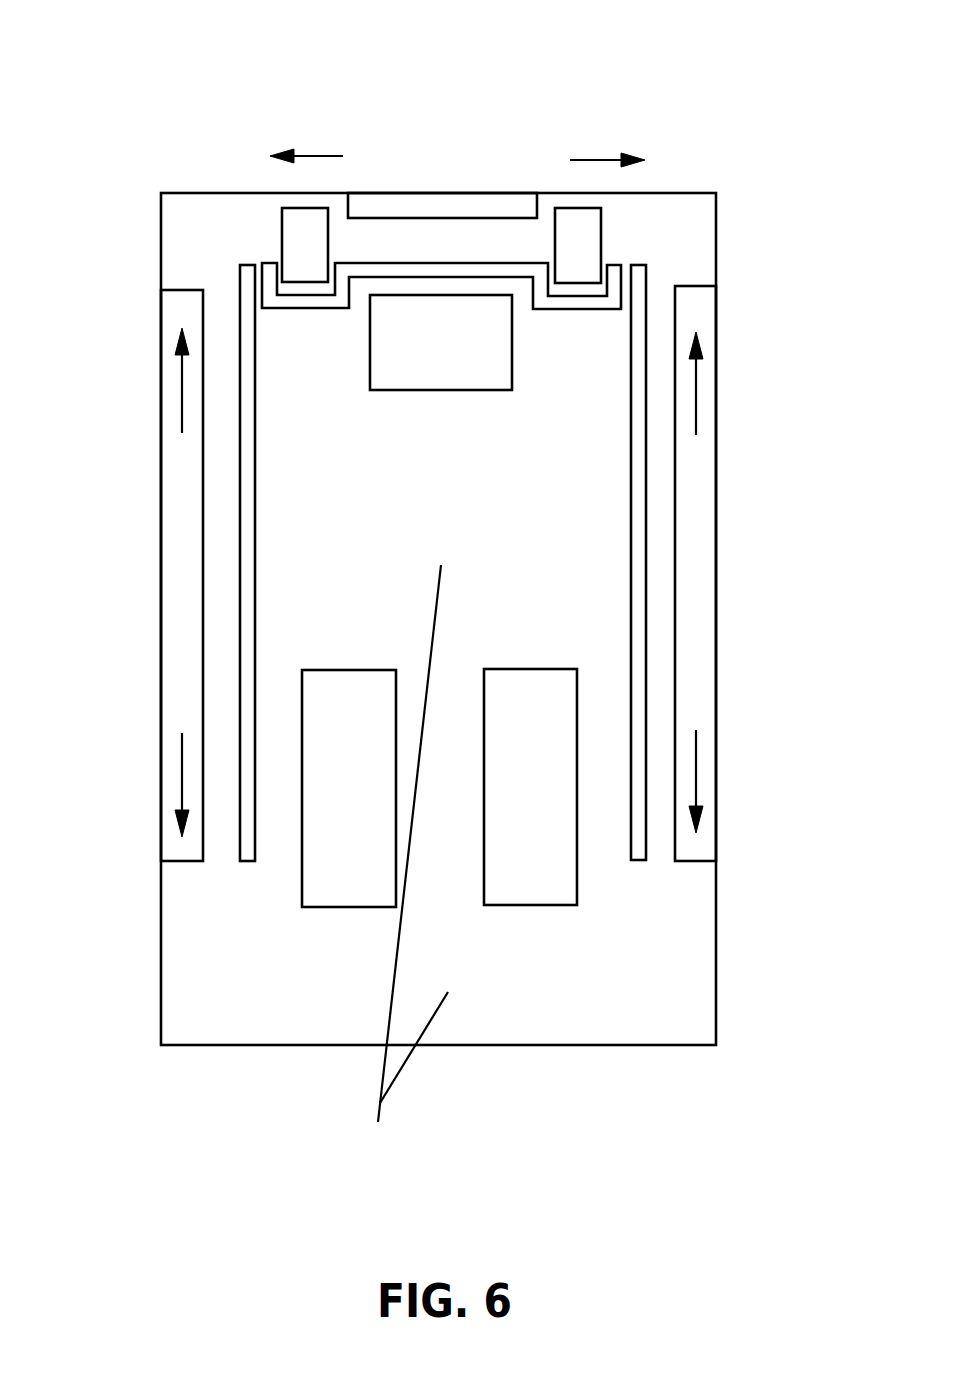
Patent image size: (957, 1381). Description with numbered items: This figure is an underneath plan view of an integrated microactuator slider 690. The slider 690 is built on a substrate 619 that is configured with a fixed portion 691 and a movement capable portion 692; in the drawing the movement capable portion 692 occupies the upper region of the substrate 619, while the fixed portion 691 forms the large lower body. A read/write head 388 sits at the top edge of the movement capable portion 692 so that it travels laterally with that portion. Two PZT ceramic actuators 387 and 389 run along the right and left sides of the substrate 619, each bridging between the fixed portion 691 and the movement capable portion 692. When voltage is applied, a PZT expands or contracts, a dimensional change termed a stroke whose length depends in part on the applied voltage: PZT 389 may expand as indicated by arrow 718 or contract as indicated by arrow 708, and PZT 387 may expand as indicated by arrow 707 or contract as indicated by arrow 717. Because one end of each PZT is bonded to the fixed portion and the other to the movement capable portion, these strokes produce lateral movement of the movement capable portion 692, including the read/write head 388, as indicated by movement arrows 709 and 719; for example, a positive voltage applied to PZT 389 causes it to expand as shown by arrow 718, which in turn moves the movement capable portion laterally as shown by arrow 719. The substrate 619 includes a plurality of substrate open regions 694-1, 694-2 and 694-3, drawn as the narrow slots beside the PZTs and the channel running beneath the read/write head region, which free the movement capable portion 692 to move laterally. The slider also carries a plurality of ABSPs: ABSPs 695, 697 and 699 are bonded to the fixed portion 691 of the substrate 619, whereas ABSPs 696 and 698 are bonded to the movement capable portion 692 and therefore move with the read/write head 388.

The integrated microactuator slider 690 is at (447, 583).
The substrate 619 is at (161, 222).
The fixed portion 691 is at (403, 859).
The movement capable portion 692 is at (220, 212).
The read/write head 388 is at (473, 208).
The ABSP 698 is at (305, 245).
The ABSP 696 is at (578, 245).
The substrate open region 694-2 is at (612, 272).
The ABSP 695 is at (441, 342).
The PZT ceramic actuator 389 is at (180, 572).
The PZT ceramic actuator 387 is at (697, 568).
The substrate open region 694-3 is at (250, 847).
The substrate open region 694-1 is at (640, 849).
The ABSP 699 is at (349, 788).
The ABSP 697 is at (530, 787).
The arrow 718 is at (182, 387).
The arrow 707 is at (698, 388).
The arrow 708 is at (182, 783).
The arrow 717 is at (697, 766).
The movement arrow 709 is at (305, 157).
The movement arrow 719 is at (605, 160).